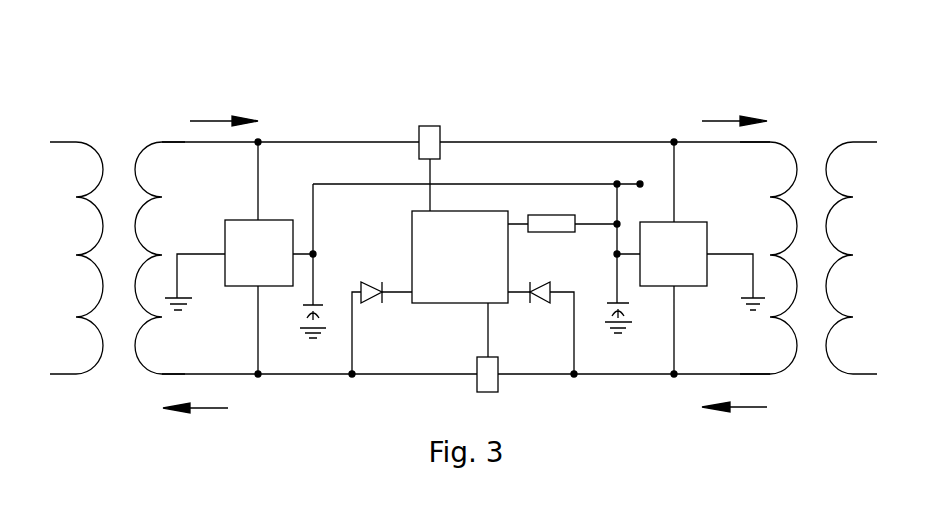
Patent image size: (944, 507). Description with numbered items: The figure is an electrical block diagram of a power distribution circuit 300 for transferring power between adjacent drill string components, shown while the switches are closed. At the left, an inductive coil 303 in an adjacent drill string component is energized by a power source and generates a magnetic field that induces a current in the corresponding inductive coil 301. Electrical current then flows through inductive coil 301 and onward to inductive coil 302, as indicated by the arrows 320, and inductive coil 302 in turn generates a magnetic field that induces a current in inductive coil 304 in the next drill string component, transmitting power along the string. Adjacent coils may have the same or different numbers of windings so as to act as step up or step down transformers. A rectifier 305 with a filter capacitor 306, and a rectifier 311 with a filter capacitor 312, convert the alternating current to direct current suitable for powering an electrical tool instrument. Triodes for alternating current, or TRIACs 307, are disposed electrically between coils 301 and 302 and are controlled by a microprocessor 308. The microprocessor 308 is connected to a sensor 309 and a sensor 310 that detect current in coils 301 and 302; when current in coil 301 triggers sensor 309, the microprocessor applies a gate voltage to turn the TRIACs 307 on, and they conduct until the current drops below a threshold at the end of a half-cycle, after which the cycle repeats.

The power distribution circuit 300 is at (163, 80).
The inductive coil 301 is at (140, 150).
The inductive coil 302 is at (793, 150).
The inductive coil 303 is at (55, 142).
The inductive coil 304 is at (850, 142).
The rectifier 305 is at (270, 287).
The filter capacitor 306 is at (331, 322).
The triode for alternating current (TRIAC) 307 is at (471, 116).
The microprocessor 308 is at (428, 233).
The sensor 309 is at (378, 309).
The sensor 310 is at (538, 308).
The rectifier 311 is at (682, 288).
The filter capacitor 312 is at (634, 336).
The arrows 320 is at (229, 112).